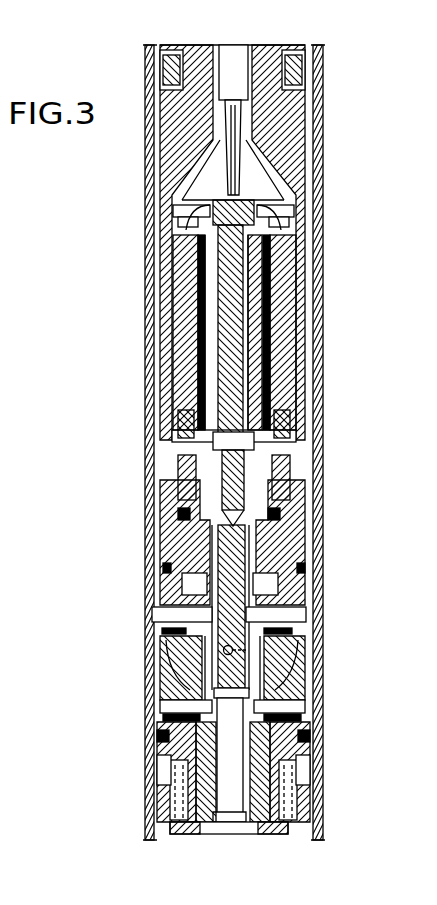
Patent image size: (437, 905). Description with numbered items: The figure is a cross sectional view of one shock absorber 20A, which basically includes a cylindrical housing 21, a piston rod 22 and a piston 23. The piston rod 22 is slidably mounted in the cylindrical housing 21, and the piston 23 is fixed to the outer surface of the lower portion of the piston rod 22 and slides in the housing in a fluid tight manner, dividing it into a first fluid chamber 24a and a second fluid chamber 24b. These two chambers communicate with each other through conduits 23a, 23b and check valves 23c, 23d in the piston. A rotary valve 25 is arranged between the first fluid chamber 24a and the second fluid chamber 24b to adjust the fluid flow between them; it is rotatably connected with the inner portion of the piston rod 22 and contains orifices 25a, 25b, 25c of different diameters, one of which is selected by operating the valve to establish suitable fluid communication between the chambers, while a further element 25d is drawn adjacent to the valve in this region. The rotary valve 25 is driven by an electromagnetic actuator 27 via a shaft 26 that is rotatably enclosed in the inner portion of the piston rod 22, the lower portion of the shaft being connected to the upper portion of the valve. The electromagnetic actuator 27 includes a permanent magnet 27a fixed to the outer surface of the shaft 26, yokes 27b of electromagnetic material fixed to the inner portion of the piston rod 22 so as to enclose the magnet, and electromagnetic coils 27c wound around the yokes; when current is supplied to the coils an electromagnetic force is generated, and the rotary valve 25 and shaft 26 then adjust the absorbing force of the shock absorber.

The shock absorber 20A is at (108, 72).
The cylindrical housing 21 is at (145, 228).
The piston rod 22 is at (160, 524).
The piston 23 is at (160, 740).
The conduit 23a is at (160, 770).
The conduit 23b is at (305, 735).
The check valve 23c is at (165, 716).
The check valve 23d is at (300, 766).
The first fluid chamber 24a is at (162, 676).
The second fluid chamber 24b is at (172, 815).
The rotary valve 25 is at (160, 580).
The orifice 25a is at (300, 614).
The orifice 25b is at (290, 650).
The orifice 25c is at (290, 676).
The seal ring 25d is at (172, 624).
The shaft 26 is at (275, 372).
The electromagnetic actuator 27 is at (305, 300).
The permanent magnet 27a is at (180, 292).
The yoke 27b is at (175, 337).
The electromagnetic coil 27c is at (172, 257).